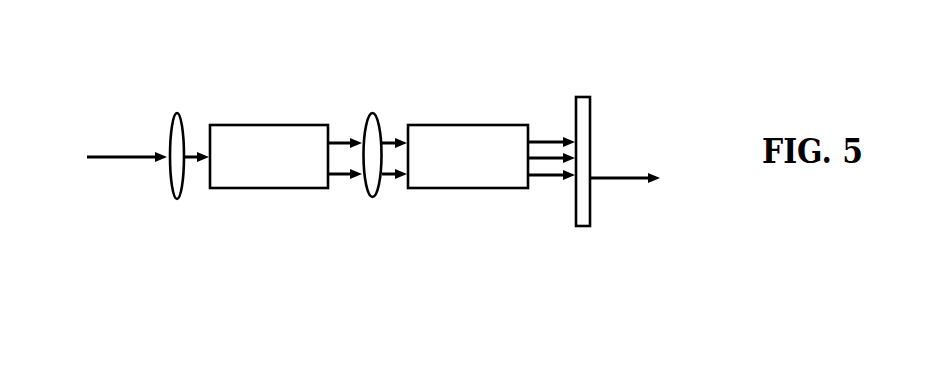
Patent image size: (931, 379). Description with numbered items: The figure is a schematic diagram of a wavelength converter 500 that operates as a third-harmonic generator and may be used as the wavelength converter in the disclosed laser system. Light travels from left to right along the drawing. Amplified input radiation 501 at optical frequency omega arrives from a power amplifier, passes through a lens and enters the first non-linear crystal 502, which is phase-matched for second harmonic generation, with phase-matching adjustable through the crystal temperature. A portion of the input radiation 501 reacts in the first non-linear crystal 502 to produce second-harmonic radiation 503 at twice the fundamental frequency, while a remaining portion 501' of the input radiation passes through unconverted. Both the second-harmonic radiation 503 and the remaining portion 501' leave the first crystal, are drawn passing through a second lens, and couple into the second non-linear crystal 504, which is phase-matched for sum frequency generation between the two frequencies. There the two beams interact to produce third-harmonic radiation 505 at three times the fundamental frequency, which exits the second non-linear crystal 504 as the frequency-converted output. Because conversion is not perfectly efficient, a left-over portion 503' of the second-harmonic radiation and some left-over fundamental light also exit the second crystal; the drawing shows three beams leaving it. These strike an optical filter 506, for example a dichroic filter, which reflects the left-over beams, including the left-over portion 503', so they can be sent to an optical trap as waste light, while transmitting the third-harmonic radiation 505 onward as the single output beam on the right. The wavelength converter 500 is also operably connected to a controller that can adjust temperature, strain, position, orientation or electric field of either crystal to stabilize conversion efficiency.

The wavelength converter 500 is at (101, 113).
The input radiation 501 is at (127, 189).
The remaining portion of the input radiation 501' is at (337, 112).
The first non-linear crystal 502 is at (265, 188).
The second-harmonic radiation 503 is at (340, 206).
The left-over portion of the second-harmonic radiation 503' is at (516, 155).
The second non-linear crystal 504 is at (468, 189).
The third-harmonic radiation 505 is at (552, 180).
The optical filter 506 is at (583, 224).